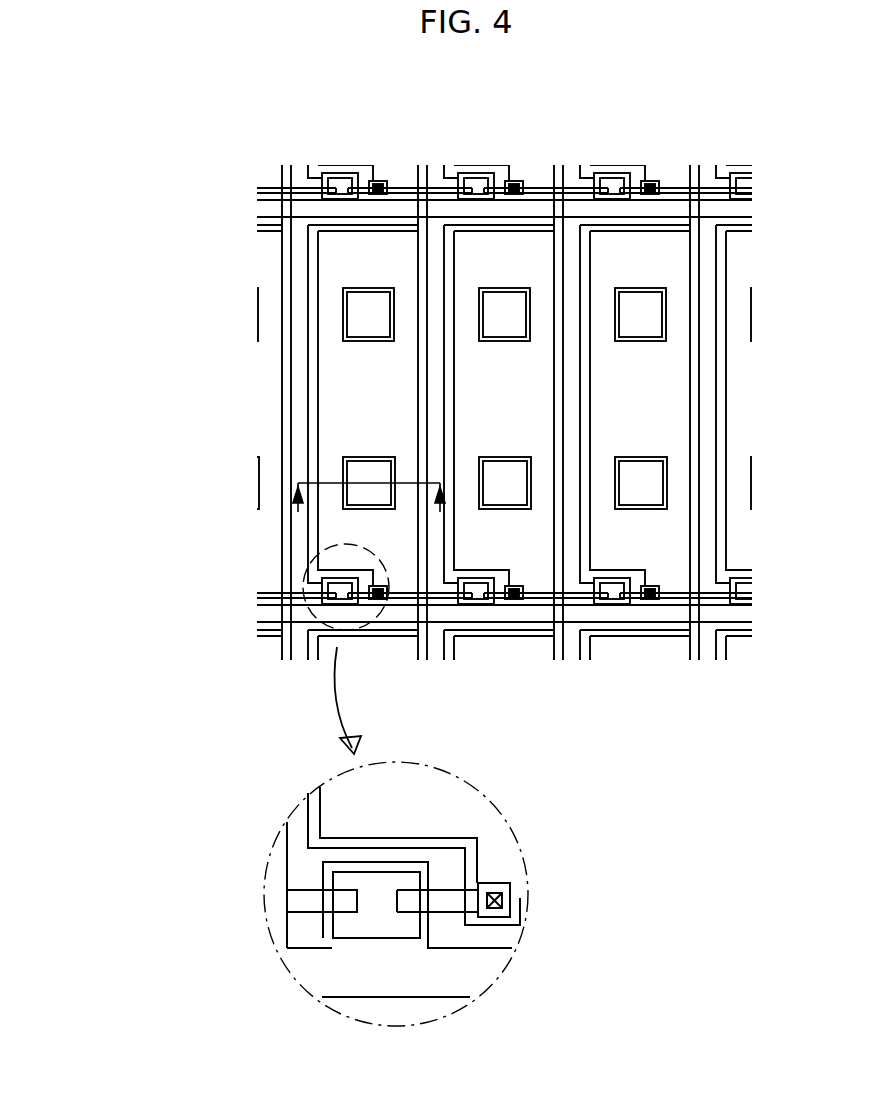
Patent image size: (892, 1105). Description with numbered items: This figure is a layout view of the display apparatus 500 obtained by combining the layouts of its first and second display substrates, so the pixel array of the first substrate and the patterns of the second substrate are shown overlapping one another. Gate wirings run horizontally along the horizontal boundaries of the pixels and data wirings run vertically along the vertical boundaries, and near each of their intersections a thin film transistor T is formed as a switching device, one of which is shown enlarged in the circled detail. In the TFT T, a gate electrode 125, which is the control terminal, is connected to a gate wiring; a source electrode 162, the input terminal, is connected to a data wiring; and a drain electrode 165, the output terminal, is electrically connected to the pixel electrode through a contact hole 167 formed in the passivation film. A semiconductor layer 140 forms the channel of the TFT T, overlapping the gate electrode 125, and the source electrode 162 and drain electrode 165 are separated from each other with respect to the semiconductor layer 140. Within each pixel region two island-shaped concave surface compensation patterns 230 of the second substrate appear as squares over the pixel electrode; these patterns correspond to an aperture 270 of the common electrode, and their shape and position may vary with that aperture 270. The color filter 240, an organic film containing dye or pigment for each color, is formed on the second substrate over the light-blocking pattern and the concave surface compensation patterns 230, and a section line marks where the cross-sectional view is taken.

The display apparatus 500 is at (583, 87).
The gate electrode 125 is at (340, 943).
The semiconductor layer 140 is at (378, 943).
The source electrode 162 is at (305, 890).
The drain electrode 165 is at (473, 883).
The contact hole 167 is at (514, 892).
The concave surface compensation pattern 230 is at (343, 331).
The color filter 240 is at (387, 226).
The aperture 270 is at (367, 288).
The TFT T is at (400, 856).